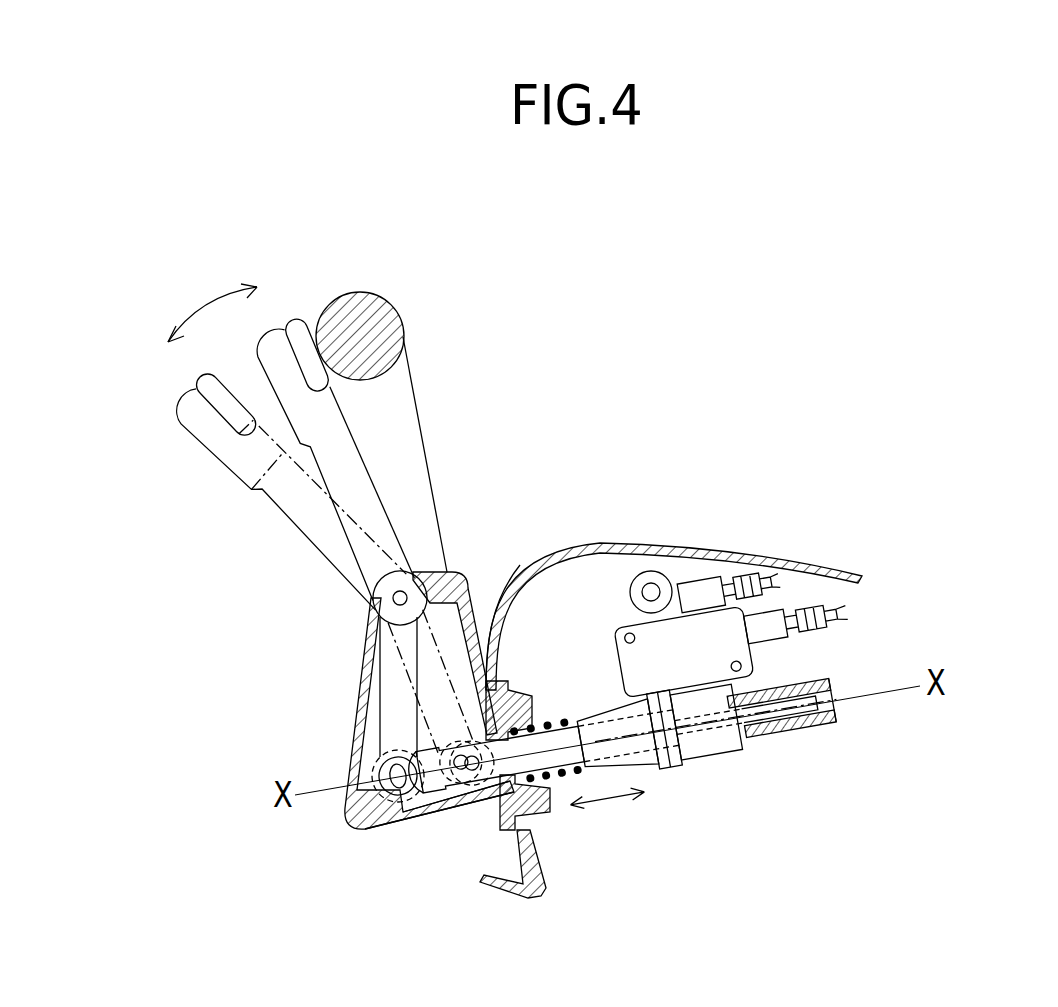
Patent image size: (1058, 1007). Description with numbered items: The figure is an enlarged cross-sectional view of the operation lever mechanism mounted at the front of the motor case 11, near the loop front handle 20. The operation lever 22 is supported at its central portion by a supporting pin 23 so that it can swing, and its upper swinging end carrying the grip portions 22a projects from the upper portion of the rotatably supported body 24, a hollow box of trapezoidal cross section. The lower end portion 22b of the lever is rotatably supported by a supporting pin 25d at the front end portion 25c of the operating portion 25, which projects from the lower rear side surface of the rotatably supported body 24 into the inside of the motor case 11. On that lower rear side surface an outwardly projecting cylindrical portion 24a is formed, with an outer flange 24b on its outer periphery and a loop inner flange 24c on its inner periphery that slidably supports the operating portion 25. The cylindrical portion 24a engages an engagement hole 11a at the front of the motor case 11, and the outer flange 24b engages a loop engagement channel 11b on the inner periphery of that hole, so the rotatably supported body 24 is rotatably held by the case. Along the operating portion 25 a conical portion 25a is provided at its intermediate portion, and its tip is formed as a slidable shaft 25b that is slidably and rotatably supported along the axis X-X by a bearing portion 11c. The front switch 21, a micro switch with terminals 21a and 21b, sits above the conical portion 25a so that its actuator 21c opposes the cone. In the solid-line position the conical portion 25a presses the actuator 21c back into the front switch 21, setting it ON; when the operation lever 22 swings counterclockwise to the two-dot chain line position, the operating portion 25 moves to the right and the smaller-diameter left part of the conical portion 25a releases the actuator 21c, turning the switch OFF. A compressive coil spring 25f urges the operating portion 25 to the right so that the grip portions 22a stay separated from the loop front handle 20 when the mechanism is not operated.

The motor case 11 is at (755, 558).
The engagement hole 11a is at (540, 722).
The loop engagement channel 11b is at (500, 667).
The bearing portion 11c is at (822, 722).
The loop front handle 20 is at (403, 340).
The front switch 21 is at (672, 627).
The terminal 21a is at (797, 630).
The terminal 21b is at (700, 577).
The actuator 21c is at (663, 758).
The operation lever 22 is at (360, 498).
The grip portions 22a is at (297, 332).
The lower end portion 22b is at (393, 730).
The supporting pin 23 is at (402, 597).
The rotatably supported body 24 is at (360, 690).
The cylindrical portion 24a is at (495, 814).
The outer flange 24b is at (548, 808).
The loop inner flange 24c is at (493, 800).
The operating portion 25 is at (578, 778).
The conical portion 25a is at (648, 762).
The slidable shaft 25b is at (745, 720).
The front end portion 25c is at (398, 820).
The supporting pin 25d is at (390, 773).
The compressive coil spring 25f is at (578, 708).